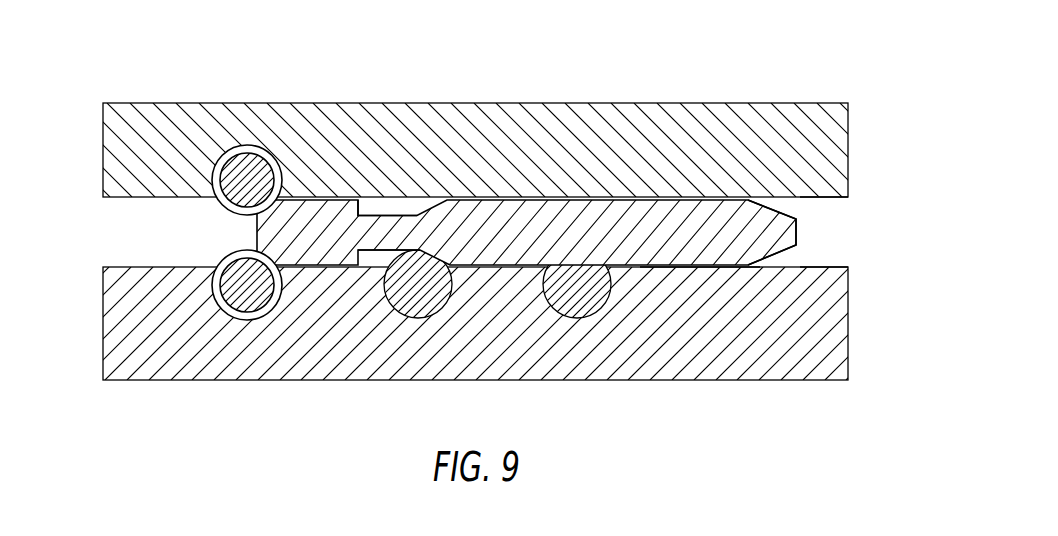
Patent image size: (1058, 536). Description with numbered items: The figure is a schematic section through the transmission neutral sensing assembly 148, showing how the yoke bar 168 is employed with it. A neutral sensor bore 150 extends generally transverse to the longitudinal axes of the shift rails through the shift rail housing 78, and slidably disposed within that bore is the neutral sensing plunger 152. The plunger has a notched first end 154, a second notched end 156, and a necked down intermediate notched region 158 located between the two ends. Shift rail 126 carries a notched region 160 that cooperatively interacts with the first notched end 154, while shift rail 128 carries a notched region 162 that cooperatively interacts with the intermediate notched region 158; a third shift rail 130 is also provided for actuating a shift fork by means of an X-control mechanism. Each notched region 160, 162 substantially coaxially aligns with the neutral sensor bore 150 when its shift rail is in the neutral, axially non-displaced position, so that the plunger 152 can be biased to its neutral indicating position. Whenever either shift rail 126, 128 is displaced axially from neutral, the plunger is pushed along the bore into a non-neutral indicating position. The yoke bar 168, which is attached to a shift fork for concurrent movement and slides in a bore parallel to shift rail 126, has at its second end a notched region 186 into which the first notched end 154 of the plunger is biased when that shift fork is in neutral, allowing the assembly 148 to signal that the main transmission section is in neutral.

The shift rail housing 78 is at (647, 102).
The shift rail 126 is at (280, 306).
The shift rail 128 is at (450, 308).
The third shift rail 130 is at (607, 308).
The transmission neutral sensing assembly 148 is at (479, 231).
The neutral sensor bore 150 is at (805, 198).
The neutral sensing plunger 152 is at (697, 268).
The first notched end 154 is at (257, 232).
The second notched end 156 is at (797, 233).
The intermediate notched region 158 is at (385, 214).
The notched region 160 is at (243, 312).
The notched region 162 is at (420, 265).
The yoke bar 168 is at (243, 147).
The notched region 186 is at (280, 165).